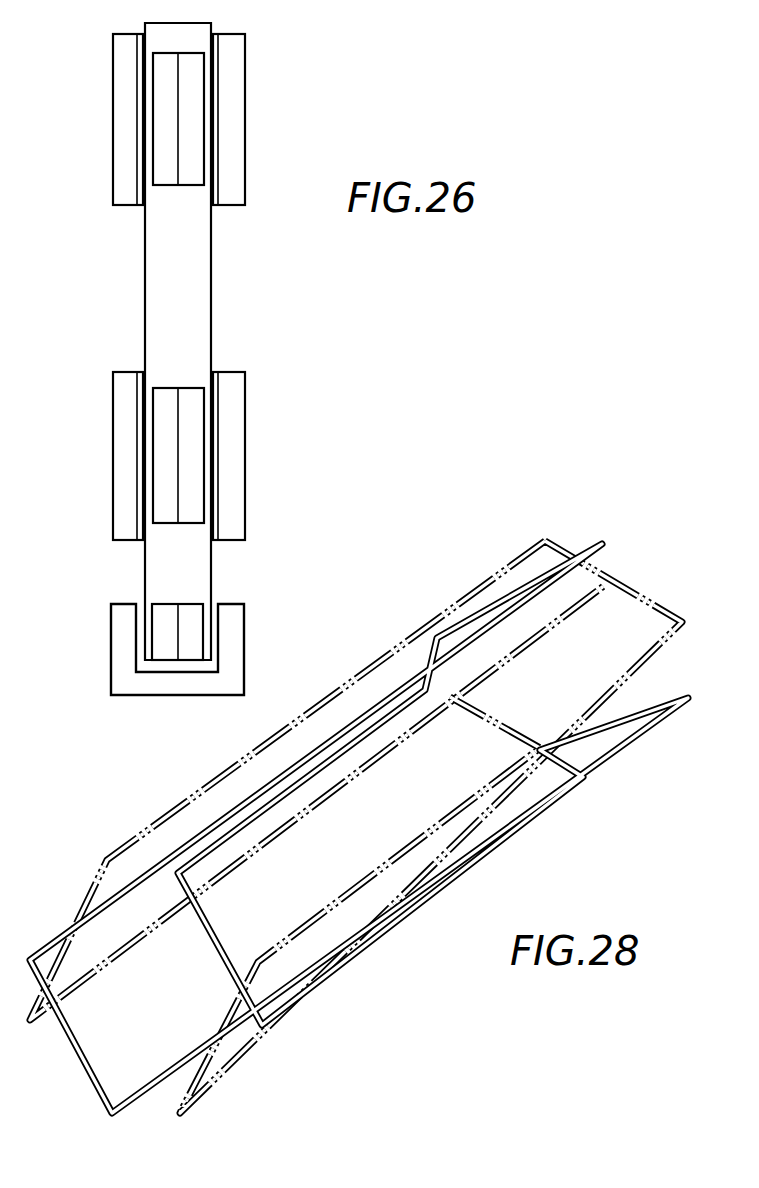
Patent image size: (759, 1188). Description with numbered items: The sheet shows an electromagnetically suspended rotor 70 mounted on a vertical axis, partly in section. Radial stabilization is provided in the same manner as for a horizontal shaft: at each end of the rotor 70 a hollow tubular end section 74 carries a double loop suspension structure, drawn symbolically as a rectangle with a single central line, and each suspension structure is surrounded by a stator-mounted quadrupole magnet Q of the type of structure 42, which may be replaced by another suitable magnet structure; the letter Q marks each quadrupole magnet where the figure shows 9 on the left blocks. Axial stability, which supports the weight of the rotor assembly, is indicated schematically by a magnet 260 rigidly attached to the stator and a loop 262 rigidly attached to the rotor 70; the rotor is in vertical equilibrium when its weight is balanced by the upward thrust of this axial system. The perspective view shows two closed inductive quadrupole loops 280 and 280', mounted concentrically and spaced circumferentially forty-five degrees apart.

In FIG. 26, the rotor 70 is at (205, 269).
In FIG. 26, the quadrupole magnet structure 42 is at (235, 124).
In FIG. 26, the hollow tubular end section 74 is at (163, 192).
In FIG. 26, the block strip 9 is at (128, 287).
In FIG. 26, the loop 262 is at (157, 606).
In FIG. 26, the magnet 260 is at (119, 656).
In FIG. 28, the closed inductive quadrupole loop 280 is at (359, 806).
In FIG. 28, the closed inductive quadrupole loop 280' is at (384, 827).